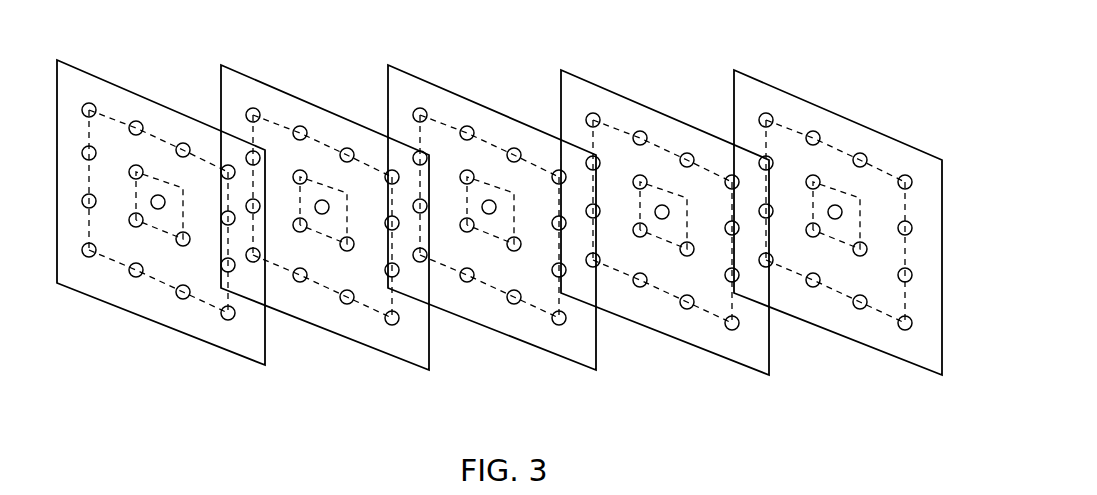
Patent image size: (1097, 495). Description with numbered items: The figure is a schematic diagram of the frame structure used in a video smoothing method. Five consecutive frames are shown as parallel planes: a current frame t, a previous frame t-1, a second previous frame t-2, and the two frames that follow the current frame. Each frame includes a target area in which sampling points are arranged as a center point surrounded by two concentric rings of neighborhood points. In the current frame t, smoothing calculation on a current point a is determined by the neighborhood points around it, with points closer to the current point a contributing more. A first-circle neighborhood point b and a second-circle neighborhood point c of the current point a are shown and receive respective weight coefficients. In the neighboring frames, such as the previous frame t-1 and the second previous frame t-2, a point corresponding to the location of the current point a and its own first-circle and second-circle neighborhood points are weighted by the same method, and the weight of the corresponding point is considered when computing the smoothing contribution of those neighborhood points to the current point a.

The second previous frame t-2 is at (88, 70).
The previous frame t-1 is at (245, 73).
The current frame t is at (422, 77).
The current point a is at (489, 304).
The first-circle neighborhood point b is at (538, 324).
The second-circle neighborhood point c is at (488, 98).